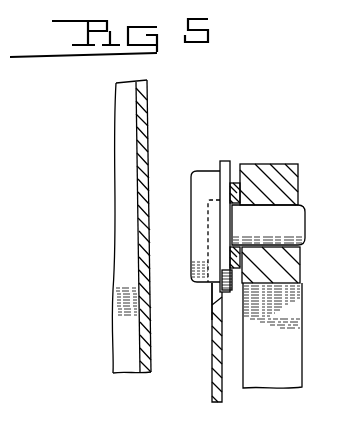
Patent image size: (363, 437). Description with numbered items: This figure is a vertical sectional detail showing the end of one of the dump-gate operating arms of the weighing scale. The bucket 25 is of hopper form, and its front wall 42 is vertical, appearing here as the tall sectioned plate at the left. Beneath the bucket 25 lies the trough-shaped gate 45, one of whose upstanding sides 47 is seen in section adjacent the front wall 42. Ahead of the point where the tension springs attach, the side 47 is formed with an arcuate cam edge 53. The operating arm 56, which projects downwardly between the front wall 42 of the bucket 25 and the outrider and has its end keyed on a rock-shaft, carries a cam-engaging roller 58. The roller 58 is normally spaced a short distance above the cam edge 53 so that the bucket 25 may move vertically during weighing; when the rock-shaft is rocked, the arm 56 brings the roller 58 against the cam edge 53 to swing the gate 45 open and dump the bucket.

The bucket 25 is at (153, 223).
The front wall 42 is at (147, 123).
The cam-engaging roller 58 is at (197, 171).
The operating arm 56 is at (280, 167).
The cam edge 53 is at (213, 302).
The gate 45 is at (209, 351).
The side 47 is at (207, 379).